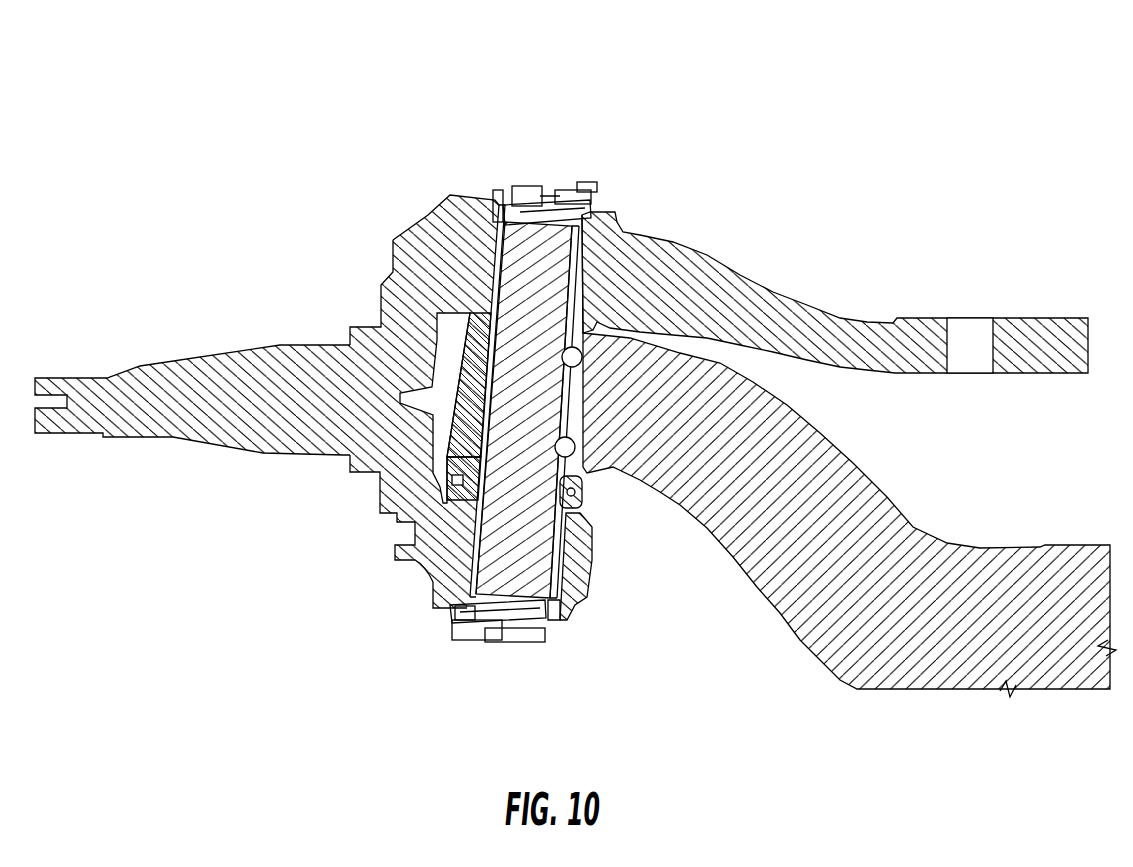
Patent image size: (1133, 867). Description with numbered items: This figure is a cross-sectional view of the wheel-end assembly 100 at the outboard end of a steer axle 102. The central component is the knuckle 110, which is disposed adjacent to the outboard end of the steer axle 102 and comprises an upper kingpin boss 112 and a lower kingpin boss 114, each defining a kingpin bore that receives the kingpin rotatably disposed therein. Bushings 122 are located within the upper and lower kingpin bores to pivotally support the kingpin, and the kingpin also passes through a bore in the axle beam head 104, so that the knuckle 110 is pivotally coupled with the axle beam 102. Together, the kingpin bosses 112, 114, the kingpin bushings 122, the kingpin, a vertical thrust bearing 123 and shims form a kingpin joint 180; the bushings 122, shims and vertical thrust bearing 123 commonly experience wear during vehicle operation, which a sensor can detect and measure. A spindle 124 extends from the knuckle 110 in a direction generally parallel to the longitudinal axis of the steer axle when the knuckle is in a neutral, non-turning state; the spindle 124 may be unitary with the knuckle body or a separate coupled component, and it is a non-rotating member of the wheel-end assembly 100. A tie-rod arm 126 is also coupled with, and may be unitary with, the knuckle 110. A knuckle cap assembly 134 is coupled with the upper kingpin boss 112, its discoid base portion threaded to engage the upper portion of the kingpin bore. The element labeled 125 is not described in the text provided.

The wheel-end assembly 100 is at (347, 108).
The steer axle 102 is at (889, 619).
The axle beam head 104 is at (467, 388).
The knuckle 110 is at (388, 303).
The upper kingpin boss 112 is at (450, 240).
The lower kingpin boss 114 is at (578, 568).
The bushings 122 is at (497, 216).
The vertical thrust bearing 123 is at (577, 498).
The spindle 124 is at (200, 390).
The outer race 125 is at (590, 318).
The tie-rod arm 126 is at (850, 333).
The knuckle cap assembly 134 is at (572, 172).
The kingpin joint 180 is at (570, 603).